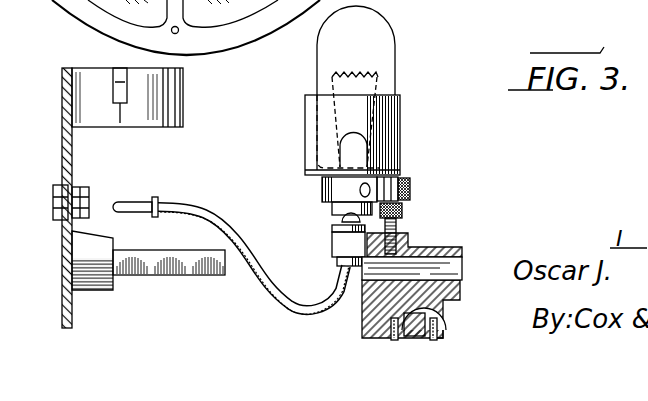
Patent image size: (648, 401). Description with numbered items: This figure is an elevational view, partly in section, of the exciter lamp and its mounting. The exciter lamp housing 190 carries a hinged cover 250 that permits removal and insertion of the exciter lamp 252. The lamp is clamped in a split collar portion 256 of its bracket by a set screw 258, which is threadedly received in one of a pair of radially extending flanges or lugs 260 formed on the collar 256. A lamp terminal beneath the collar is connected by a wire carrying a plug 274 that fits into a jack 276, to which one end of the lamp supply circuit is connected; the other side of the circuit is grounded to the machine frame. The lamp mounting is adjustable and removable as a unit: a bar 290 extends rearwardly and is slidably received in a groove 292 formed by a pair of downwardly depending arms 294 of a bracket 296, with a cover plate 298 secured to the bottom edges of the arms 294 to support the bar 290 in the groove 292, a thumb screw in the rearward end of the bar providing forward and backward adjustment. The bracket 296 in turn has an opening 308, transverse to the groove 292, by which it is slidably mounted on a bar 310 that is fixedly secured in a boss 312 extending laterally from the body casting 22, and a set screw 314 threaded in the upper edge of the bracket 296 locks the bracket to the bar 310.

The body casting 22 is at (62, 152).
The exciter lamp housing 190 is at (87, 78).
The hinged cover 250 is at (184, 90).
The jack 276 is at (86, 184).
The plug 274 is at (137, 204).
The boss 312 is at (88, 292).
The bar 310 is at (176, 276).
The exciter lamp 252 is at (386, 47).
The split collar portion 256 is at (340, 193).
The flanges or lugs 260 is at (325, 183).
The set screw 258 is at (402, 186).
The set screw 314 is at (404, 208).
The bracket 296 is at (428, 248).
The opening 308 is at (462, 262).
The groove 292 is at (445, 299).
The downwardly depending arms 294 is at (392, 313).
The bar 290 is at (390, 336).
The cover plate 298 is at (445, 334).